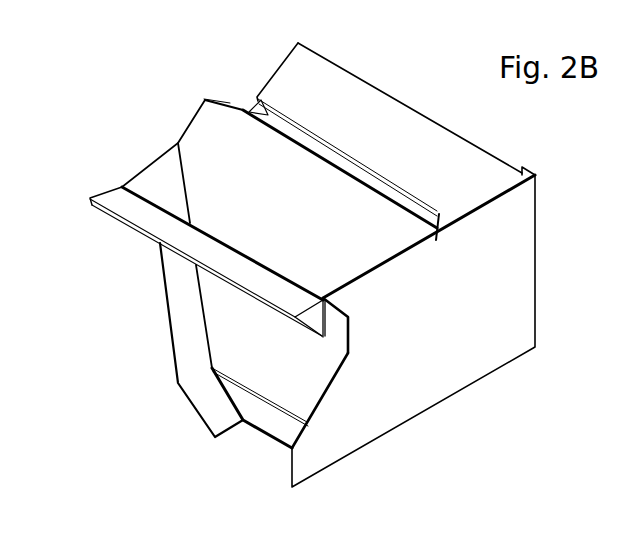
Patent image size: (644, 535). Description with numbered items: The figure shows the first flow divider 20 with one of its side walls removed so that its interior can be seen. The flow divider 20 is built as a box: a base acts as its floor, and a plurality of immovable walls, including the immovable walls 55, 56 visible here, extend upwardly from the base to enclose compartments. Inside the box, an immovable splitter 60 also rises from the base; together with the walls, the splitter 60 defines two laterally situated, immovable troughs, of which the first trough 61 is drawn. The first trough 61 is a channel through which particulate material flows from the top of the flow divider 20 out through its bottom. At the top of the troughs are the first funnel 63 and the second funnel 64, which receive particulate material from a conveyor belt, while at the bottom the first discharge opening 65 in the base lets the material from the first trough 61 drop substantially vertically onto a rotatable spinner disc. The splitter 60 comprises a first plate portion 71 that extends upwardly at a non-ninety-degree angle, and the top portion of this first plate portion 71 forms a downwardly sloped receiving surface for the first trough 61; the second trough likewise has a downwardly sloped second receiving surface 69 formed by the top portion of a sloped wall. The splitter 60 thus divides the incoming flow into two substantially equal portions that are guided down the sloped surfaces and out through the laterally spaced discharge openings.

The first flow divider 20 is at (574, 289).
The immovable wall 55 is at (460, 376).
The immovable wall 56 is at (172, 291).
The immovable splitter 60 is at (244, 110).
The first trough 61 is at (227, 357).
The first funnel 63 is at (153, 186).
The second funnel 64 is at (291, 117).
The first discharge opening 65 is at (266, 451).
The second particulate material receiving surface 69 is at (390, 134).
The first plate portion 71 is at (192, 137).